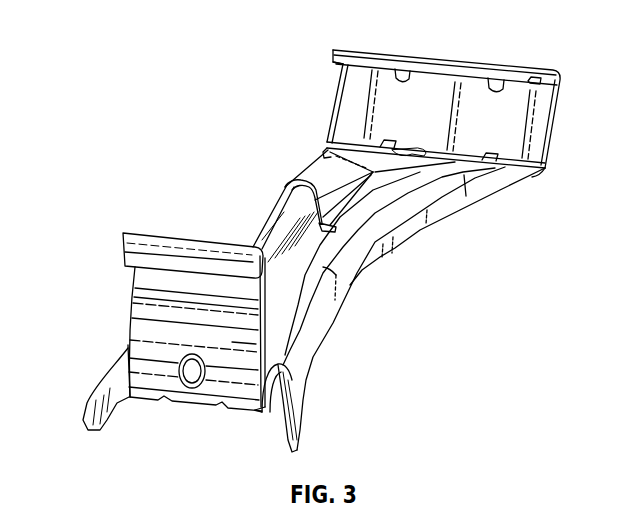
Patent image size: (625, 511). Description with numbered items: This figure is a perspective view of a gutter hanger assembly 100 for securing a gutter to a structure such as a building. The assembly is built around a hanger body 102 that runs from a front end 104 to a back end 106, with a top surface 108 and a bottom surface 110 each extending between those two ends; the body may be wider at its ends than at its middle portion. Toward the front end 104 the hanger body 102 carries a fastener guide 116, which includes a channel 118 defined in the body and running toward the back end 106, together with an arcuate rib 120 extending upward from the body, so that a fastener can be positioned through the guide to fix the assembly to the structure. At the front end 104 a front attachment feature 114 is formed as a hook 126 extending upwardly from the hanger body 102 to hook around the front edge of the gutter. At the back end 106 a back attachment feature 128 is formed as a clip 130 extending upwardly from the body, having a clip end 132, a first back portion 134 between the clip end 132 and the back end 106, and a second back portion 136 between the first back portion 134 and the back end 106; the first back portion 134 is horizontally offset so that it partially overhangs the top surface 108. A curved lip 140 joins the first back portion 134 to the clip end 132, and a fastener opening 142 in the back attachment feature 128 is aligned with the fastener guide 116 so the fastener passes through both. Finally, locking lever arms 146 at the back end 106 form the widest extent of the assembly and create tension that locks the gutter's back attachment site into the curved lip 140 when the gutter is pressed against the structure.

The gutter hanger assembly 100 is at (139, 107).
The hanger body 102 is at (395, 215).
The front end 104 is at (548, 175).
The back end 106 is at (242, 414).
The top surface 108 is at (428, 193).
The bottom surface 110 is at (397, 248).
The front attachment feature 114 is at (548, 72).
The fastener guide 116 is at (278, 157).
The channel 118 is at (325, 195).
The rib 120 is at (273, 218).
The hook 126 is at (442, 62).
The back attachment feature 128 is at (128, 256).
The clip 130 is at (130, 238).
The clip end 132 is at (138, 277).
The first back portion 134 is at (140, 298).
The second back portion 136 is at (126, 347).
The curved lip 140 is at (150, 234).
The fastener opening 142 is at (163, 400).
The locking lever arms 146 is at (82, 410).